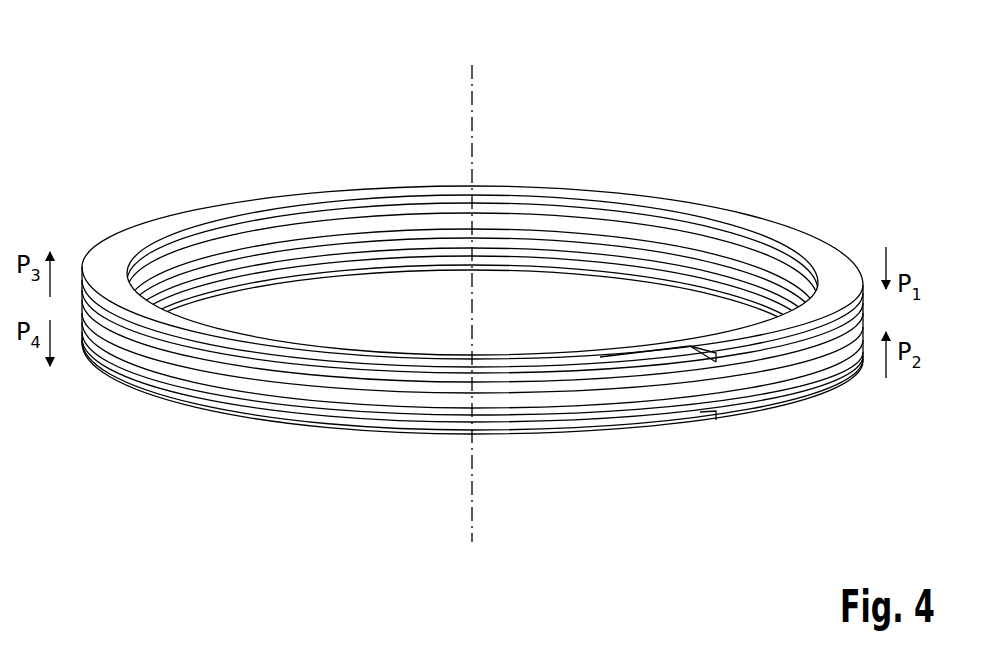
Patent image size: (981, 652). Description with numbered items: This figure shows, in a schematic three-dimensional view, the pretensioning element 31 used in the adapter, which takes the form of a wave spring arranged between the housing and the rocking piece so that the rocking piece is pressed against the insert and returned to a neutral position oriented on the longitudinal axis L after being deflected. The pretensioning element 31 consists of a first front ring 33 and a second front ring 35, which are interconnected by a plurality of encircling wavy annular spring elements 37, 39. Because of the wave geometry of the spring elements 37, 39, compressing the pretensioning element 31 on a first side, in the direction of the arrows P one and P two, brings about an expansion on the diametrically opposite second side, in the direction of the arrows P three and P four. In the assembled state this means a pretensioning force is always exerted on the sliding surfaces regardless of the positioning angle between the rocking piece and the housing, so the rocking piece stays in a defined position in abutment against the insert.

The pretensioning element 31 is at (472, 260).
The first front ring 33 is at (129, 243).
The second front ring 35 is at (170, 397).
The wavy annular spring element 37 is at (348, 403).
The wavy annular spring element 39 is at (408, 390).
The longitudinal axis L is at (475, 119).